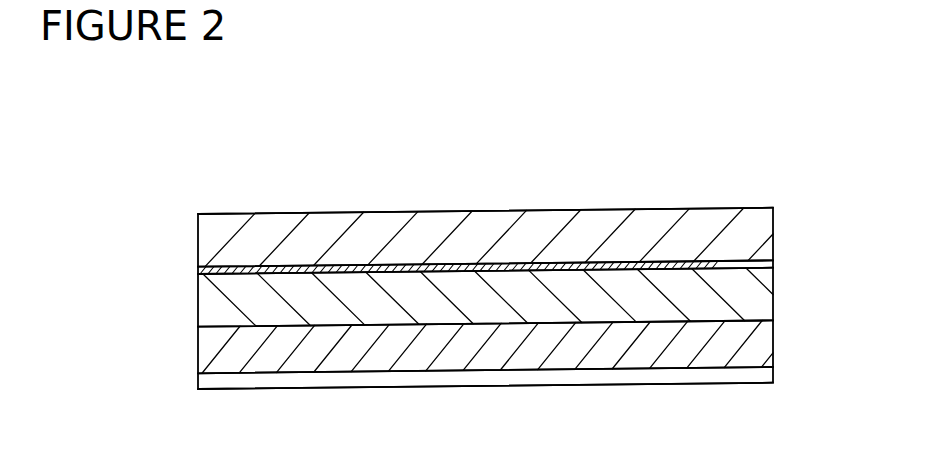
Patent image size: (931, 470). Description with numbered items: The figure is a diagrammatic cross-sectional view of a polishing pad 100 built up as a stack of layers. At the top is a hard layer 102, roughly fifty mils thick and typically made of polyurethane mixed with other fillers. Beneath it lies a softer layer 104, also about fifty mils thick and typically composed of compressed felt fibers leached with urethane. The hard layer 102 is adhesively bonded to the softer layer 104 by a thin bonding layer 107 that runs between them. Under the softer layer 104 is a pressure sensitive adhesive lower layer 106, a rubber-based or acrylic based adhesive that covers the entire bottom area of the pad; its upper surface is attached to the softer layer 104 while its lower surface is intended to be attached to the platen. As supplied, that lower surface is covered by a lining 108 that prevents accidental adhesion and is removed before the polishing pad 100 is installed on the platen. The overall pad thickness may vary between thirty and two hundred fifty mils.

The polishing pad 100 is at (182, 200).
The hard layer 102 is at (753, 235).
The softer layer 104 is at (767, 305).
The pressure sensitive adhesive lower layer 106 is at (768, 345).
The bonding layer 107 is at (202, 270).
The lining 108 is at (740, 374).